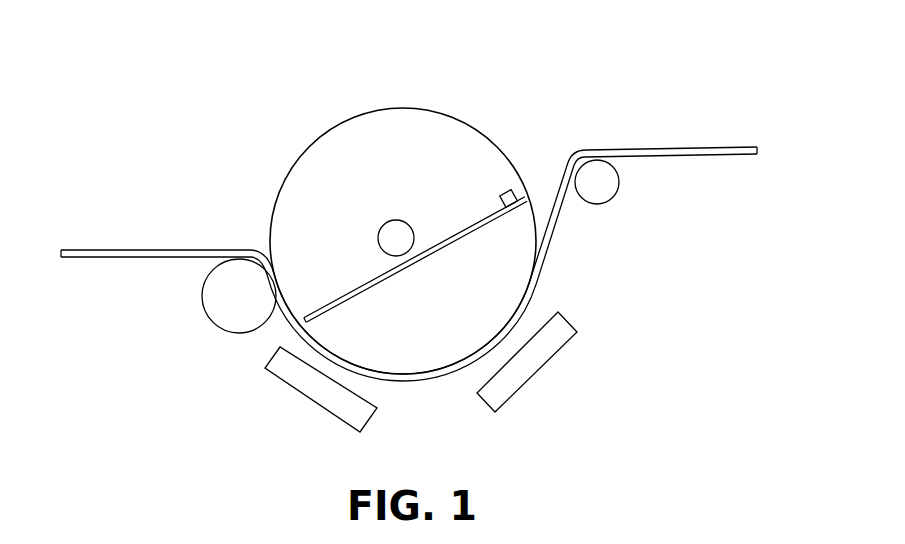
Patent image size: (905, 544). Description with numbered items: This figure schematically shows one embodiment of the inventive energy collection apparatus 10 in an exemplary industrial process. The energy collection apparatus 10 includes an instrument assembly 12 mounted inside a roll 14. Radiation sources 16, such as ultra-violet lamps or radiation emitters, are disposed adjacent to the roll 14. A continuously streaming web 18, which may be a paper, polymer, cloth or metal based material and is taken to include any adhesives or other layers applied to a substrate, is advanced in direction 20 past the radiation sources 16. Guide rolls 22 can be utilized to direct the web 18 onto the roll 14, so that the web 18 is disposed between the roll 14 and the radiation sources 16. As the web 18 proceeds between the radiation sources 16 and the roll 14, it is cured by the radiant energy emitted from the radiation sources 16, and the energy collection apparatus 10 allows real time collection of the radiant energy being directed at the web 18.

The energy collection apparatus 10 is at (542, 65).
The instrument assembly 12 is at (374, 298).
The roll 14 is at (391, 100).
The radiation sources 16 is at (305, 410).
The web 18 is at (698, 170).
The direction 20 is at (150, 242).
The guide rolls 22 is at (218, 340).